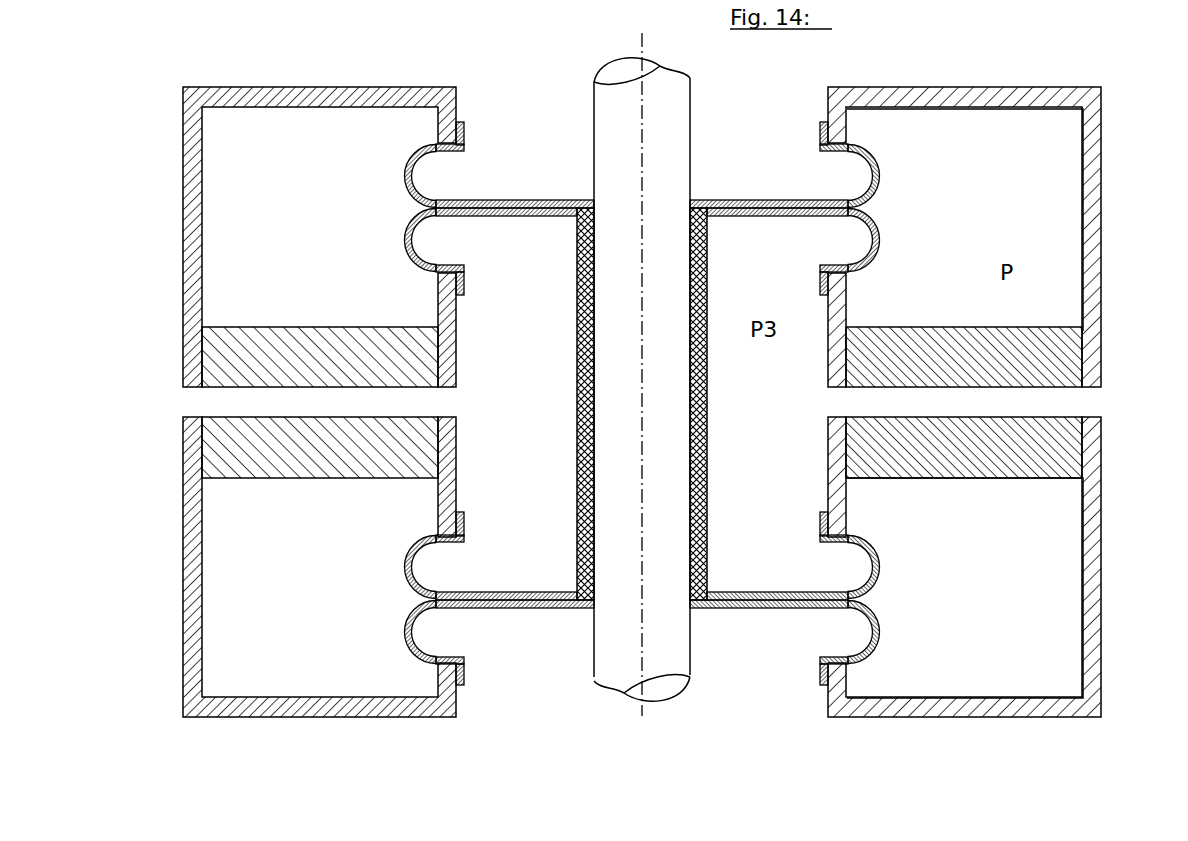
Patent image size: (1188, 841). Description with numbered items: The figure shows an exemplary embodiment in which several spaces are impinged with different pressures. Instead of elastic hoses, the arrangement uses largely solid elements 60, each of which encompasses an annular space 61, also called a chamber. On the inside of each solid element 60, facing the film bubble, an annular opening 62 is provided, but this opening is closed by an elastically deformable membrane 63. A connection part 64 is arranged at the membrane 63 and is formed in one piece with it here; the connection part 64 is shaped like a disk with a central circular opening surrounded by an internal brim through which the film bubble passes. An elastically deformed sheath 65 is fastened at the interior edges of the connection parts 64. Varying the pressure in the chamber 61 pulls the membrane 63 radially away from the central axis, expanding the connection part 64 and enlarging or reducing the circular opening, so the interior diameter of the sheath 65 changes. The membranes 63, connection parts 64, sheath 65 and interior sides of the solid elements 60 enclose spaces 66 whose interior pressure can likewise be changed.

The solid element 60 is at (1093, 157).
The annular space 61 is at (965, 403).
The annular opening 62 is at (813, 172).
The membrane 63 is at (880, 250).
The connection part 64 is at (762, 218).
The sheath 65 is at (708, 427).
The space 66 is at (788, 403).